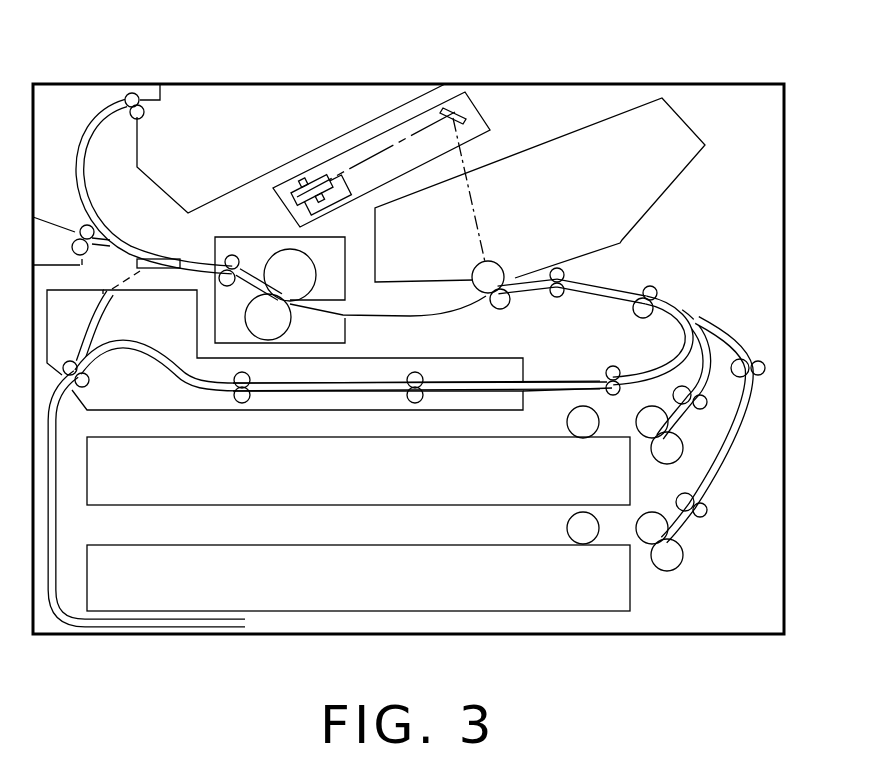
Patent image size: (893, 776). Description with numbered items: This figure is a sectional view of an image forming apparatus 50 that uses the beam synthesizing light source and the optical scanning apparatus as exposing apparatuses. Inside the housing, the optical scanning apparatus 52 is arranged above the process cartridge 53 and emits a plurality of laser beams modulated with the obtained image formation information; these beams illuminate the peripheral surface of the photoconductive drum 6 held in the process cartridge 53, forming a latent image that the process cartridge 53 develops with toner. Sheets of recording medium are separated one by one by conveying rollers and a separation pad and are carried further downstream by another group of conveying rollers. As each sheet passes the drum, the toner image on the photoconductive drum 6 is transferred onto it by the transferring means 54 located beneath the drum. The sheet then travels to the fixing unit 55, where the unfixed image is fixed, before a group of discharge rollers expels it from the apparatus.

The image forming apparatus 50 is at (97, 103).
The fixing device 55 is at (265, 245).
The optical scanning apparatus 52 is at (325, 170).
The photoconductive drum 6 is at (500, 262).
The process cartridge 53 is at (613, 133).
The transferring means 54 is at (510, 307).